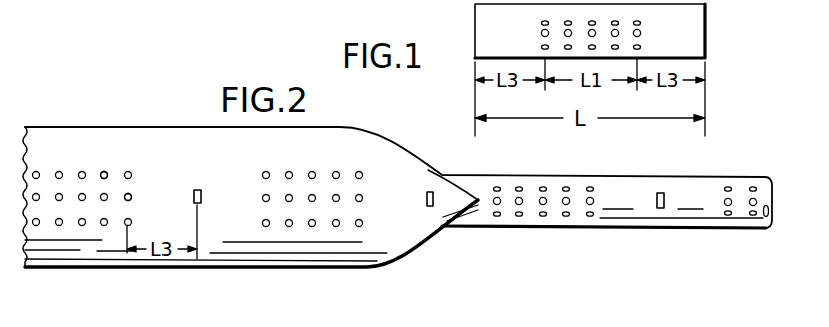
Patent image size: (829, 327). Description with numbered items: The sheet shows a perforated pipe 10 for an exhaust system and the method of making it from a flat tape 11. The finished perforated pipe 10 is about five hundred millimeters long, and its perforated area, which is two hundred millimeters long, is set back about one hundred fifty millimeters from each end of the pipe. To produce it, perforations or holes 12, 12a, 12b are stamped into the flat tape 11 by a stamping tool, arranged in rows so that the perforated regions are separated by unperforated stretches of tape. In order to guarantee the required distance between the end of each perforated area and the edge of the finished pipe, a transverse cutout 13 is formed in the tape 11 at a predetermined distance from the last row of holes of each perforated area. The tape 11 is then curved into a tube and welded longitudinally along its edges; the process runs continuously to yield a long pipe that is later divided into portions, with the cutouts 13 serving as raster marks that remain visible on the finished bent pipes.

In FIG. 1, the perforated pipe 10 is at (483, 32).
In FIG. 2, the flat tape 11 is at (102, 256).
In FIG. 2, the perforations 12 is at (63, 170).
In FIG. 2, the perforation 12a is at (110, 169).
In FIG. 2, the perforation 12b is at (131, 192).
In FIG. 2, the transverse cutout 13 is at (201, 193).